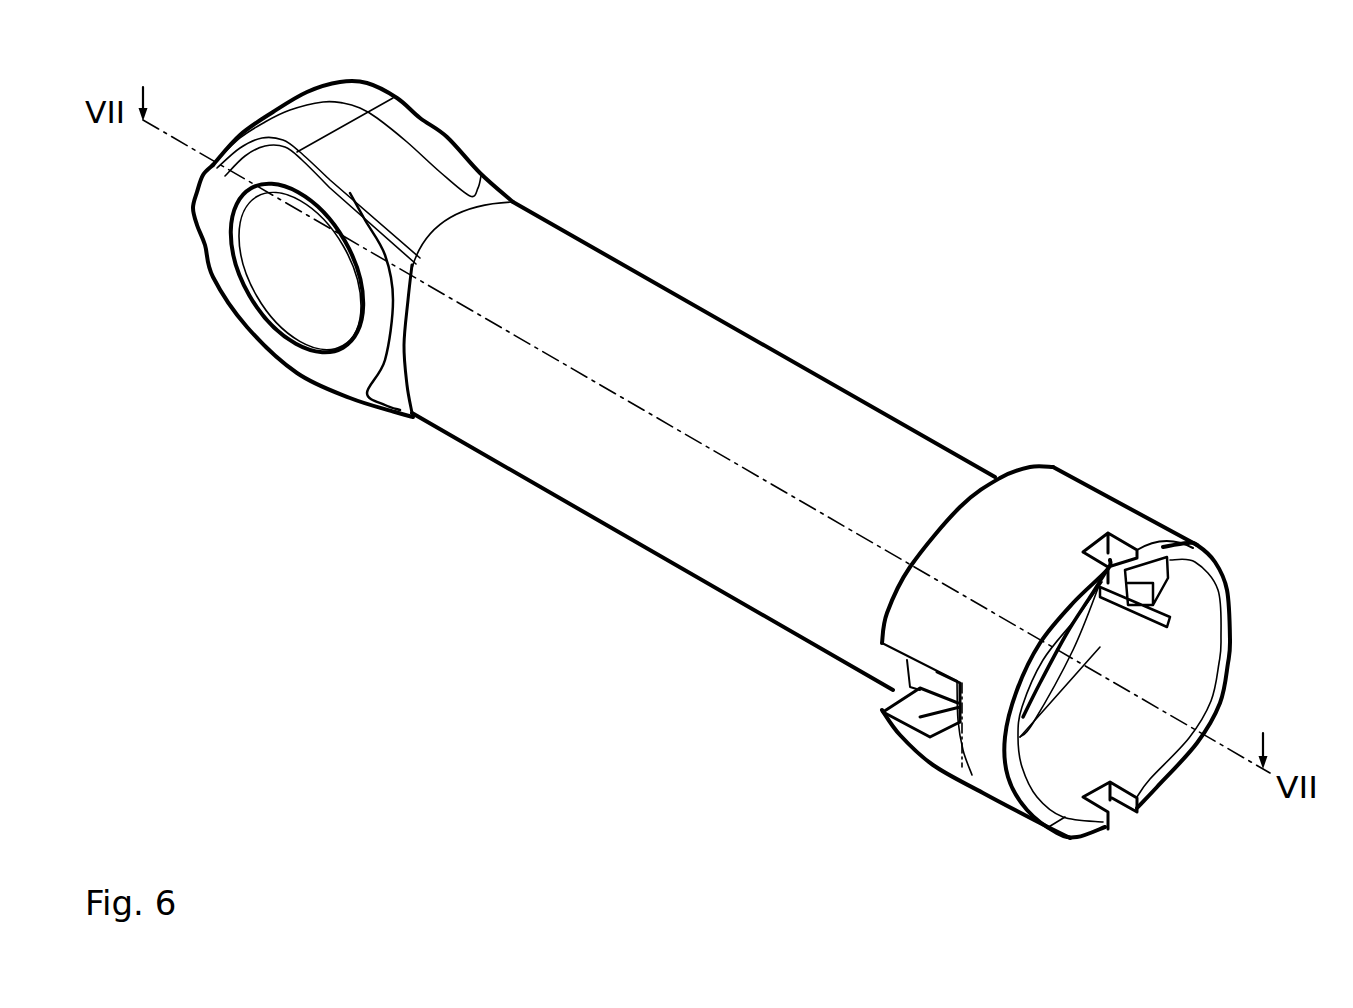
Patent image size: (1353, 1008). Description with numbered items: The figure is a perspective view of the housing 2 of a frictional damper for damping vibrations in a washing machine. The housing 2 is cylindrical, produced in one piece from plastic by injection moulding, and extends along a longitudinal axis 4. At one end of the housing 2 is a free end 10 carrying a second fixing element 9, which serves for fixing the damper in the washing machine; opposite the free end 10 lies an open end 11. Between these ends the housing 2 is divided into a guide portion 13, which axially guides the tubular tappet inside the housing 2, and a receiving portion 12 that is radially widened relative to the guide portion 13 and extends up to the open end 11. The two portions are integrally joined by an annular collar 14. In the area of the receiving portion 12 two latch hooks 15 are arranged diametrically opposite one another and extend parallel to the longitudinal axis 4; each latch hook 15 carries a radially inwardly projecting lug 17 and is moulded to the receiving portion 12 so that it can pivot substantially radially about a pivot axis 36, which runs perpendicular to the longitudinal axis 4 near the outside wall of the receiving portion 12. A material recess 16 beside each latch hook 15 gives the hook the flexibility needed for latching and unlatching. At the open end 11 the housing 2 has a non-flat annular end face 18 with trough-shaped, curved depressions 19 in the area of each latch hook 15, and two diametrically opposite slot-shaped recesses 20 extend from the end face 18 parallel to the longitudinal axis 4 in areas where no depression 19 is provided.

The housing 2 is at (641, 262).
The longitudinal axis 4 is at (700, 442).
The second fixing element 9 is at (382, 133).
The free end 10 is at (440, 127).
The open end 11 is at (1240, 661).
The receiving portion 12 is at (1040, 488).
The guide portion 13 is at (793, 397).
The annular collar 14 is at (1077, 650).
The latch hook 15 is at (937, 714).
The material recess 16 is at (896, 712).
The lug 17 is at (1143, 590).
The end face 18 is at (1157, 552).
The depression 19 is at (1223, 595).
The slot-shaped recess 20 is at (1097, 547).
The pivot axis 36 is at (970, 773).